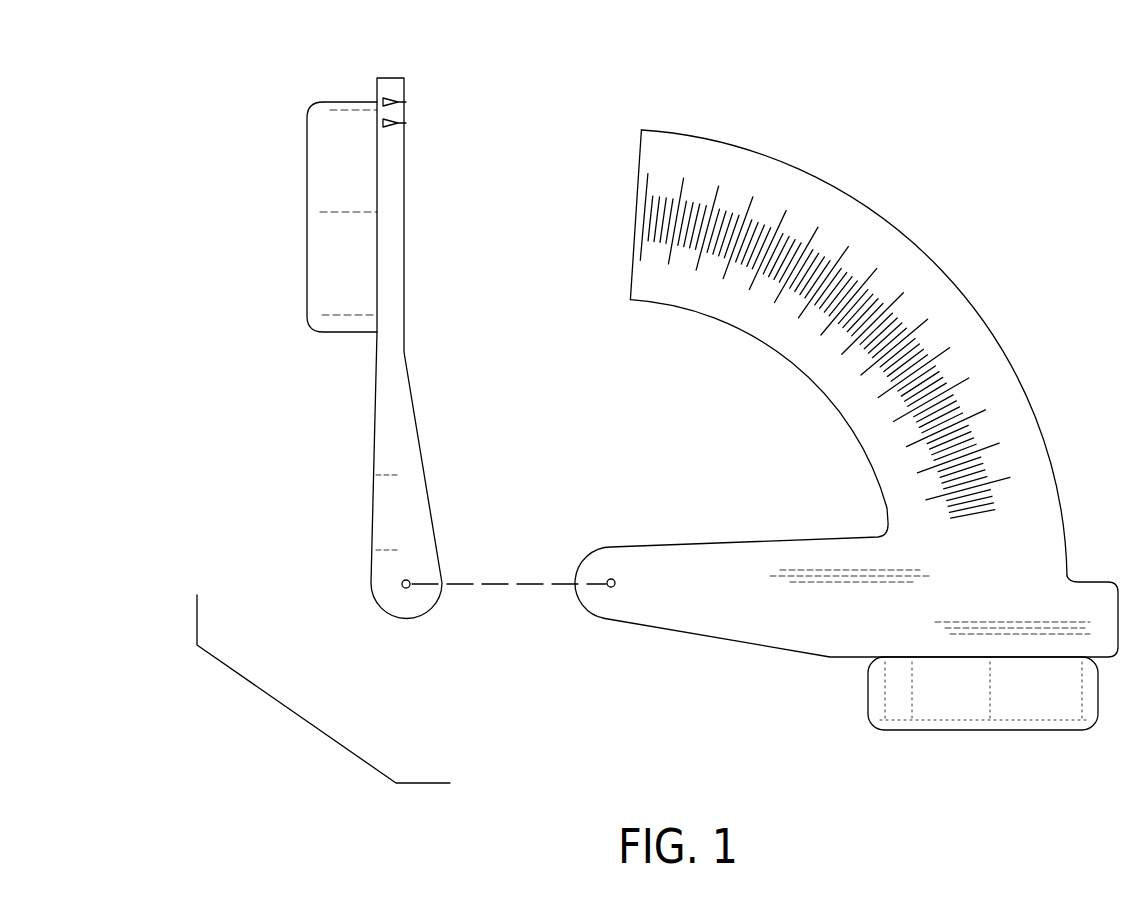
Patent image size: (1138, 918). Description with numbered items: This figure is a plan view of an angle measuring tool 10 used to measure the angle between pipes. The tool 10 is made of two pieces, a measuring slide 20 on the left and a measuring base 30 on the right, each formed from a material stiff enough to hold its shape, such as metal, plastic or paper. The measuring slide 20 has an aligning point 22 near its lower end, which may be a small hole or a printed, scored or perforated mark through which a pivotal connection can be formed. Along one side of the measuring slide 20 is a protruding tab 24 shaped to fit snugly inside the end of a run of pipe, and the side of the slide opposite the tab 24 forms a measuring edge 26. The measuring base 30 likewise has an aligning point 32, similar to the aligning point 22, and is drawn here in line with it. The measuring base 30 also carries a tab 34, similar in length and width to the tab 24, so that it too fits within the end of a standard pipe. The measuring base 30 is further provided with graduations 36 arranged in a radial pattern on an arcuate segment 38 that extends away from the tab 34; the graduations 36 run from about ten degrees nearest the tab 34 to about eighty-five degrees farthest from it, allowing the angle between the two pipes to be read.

The angle measuring tool 10 is at (323, 689).
The measuring slide 20 is at (357, 349).
The aligning point 22 is at (409, 588).
The tab 24 is at (328, 128).
The measuring edge 26 is at (404, 248).
The measuring base 30 is at (850, 446).
The aligning point 32 is at (613, 588).
The tab 34 is at (1033, 703).
The graduations 36 is at (858, 297).
The arcuate segment 38 is at (1040, 448).